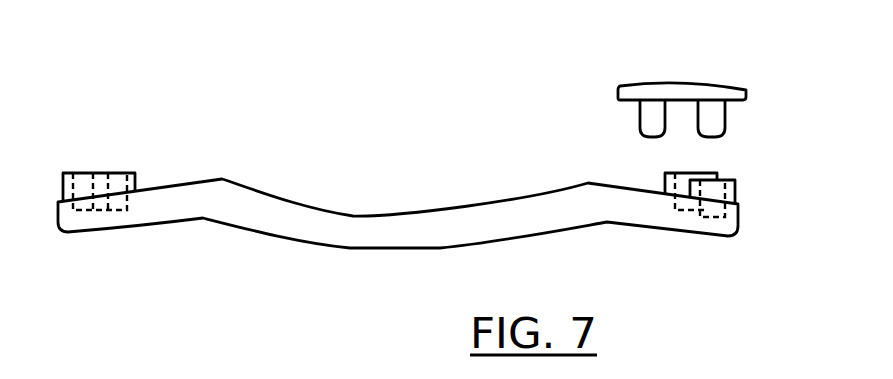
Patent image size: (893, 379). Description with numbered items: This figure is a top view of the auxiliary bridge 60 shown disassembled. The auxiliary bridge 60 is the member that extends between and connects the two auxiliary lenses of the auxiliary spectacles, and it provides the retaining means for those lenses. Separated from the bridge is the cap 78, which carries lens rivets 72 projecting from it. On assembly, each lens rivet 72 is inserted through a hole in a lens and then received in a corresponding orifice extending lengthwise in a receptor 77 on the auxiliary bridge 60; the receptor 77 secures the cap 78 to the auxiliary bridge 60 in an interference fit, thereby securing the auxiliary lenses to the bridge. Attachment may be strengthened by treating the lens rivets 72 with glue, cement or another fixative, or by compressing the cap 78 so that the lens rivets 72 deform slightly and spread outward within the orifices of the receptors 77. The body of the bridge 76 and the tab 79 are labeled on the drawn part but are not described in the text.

The auxiliary bridge 60 is at (410, 225).
The bar body portion 76 is at (153, 213).
The left fastening tab 79 is at (85, 178).
The receptor 77 is at (737, 197).
The cap 78 is at (747, 90).
The lens rivet 72 is at (718, 123).